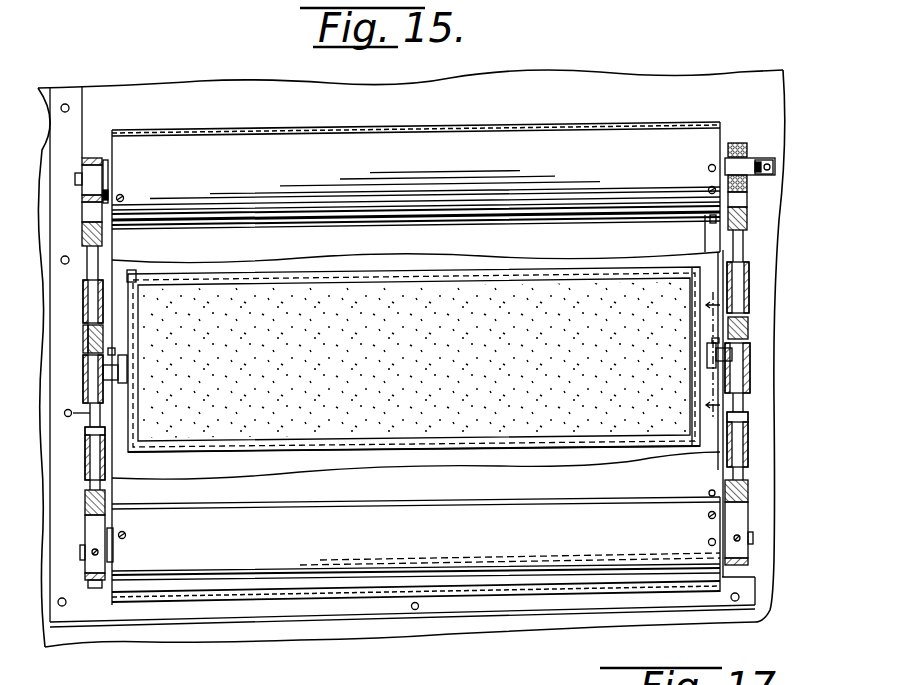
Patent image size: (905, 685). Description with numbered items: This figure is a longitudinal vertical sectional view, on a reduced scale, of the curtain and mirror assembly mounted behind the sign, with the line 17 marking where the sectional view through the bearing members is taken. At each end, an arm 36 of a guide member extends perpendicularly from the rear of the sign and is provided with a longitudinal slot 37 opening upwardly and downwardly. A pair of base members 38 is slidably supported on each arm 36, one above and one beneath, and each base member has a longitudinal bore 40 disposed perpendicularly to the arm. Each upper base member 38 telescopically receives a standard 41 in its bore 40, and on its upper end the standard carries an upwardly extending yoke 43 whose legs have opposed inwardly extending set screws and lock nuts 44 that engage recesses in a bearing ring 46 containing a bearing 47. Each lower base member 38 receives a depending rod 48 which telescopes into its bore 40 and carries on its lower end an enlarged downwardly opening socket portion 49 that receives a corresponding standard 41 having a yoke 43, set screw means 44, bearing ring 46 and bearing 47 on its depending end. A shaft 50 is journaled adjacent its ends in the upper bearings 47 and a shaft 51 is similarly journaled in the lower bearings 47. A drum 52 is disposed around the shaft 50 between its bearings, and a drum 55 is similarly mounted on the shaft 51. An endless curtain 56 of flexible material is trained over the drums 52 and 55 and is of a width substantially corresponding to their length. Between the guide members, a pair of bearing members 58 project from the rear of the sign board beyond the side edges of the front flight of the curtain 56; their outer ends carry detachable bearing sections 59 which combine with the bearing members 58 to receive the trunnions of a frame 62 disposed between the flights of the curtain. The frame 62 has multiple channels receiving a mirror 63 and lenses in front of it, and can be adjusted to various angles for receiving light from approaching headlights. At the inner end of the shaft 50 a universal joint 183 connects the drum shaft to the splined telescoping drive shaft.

The section line of FIG. 17 is at (712, 357).
The arm 36 is at (88, 345).
The longitudinal slot 37 is at (750, 339).
The base member 38 is at (87, 313).
The longitudinal bore 40 is at (737, 293).
The standard 41 is at (95, 260).
The yoke 43 is at (100, 234).
The set screws and lock nuts 44 is at (98, 552).
The bearing ring 46 is at (90, 157).
The bearing 47 is at (97, 181).
The depending rod 48 is at (787, 397).
The socket portion 49 is at (87, 450).
The shaft 50 is at (748, 162).
The shaft 51 is at (751, 542).
The drum 52 is at (416, 192).
The drum 55 is at (416, 551).
The endless curtain 56 is at (472, 126).
The bearing member 58 is at (118, 378).
The bearing section 59 is at (116, 360).
The frame 62 is at (430, 445).
The mirror 63 is at (413, 359).
The universal joint 183 is at (770, 160).